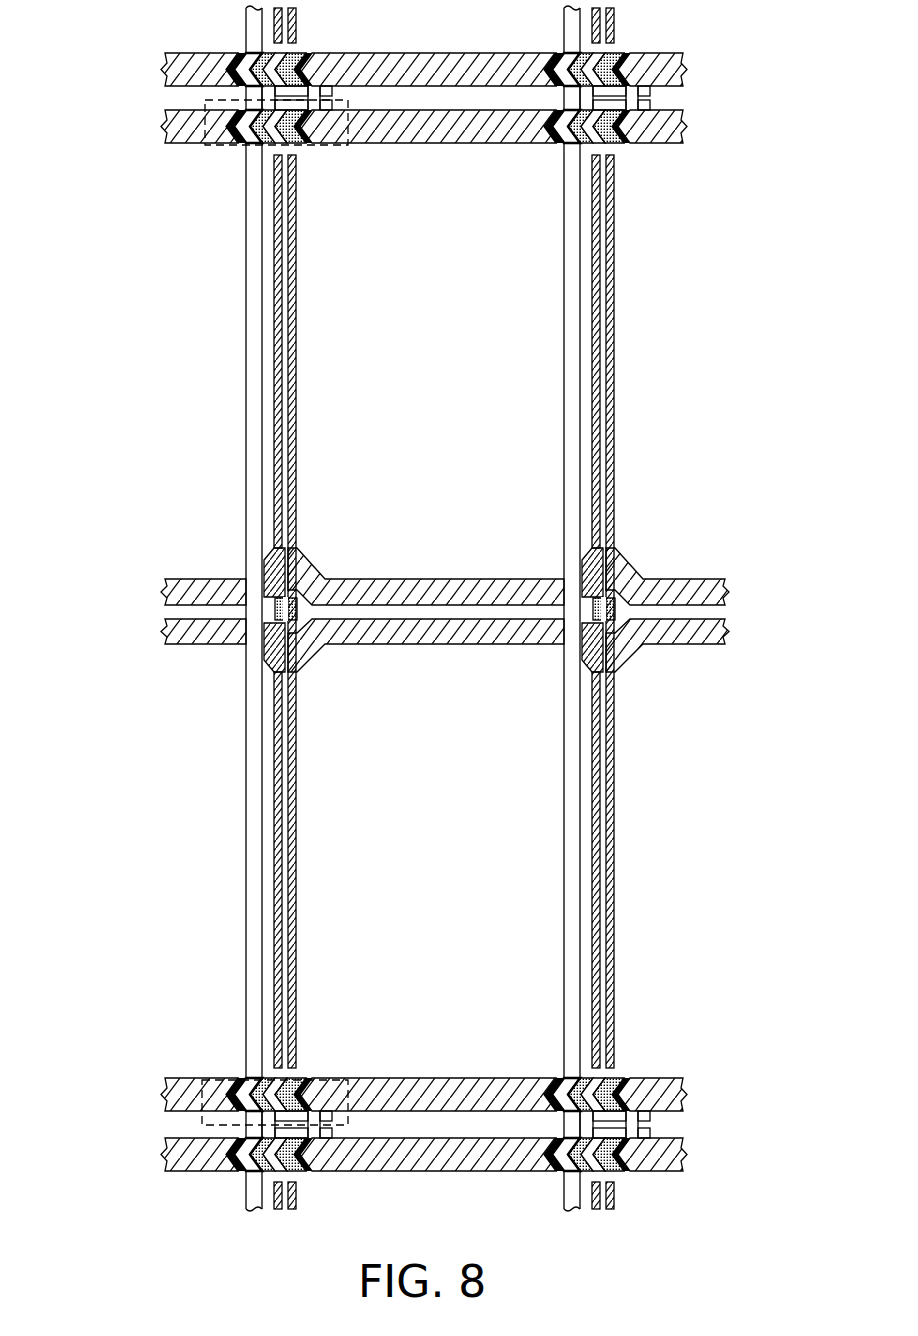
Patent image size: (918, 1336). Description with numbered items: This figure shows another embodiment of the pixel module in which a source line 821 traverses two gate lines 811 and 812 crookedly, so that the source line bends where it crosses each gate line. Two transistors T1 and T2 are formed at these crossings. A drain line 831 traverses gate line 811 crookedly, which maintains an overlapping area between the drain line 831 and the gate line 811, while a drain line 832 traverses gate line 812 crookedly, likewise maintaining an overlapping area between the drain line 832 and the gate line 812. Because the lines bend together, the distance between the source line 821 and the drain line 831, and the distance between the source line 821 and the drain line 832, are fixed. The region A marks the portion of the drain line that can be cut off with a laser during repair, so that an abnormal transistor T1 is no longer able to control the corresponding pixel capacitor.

The gate line 811 is at (188, 1096).
The gate line 812 is at (168, 122).
The source line 821 is at (256, 328).
The drain line 831 is at (270, 638).
The drain line 832 is at (256, 149).
The transistor T1 is at (212, 1078).
The transistor T2 is at (317, 148).
The region A is at (272, 1073).